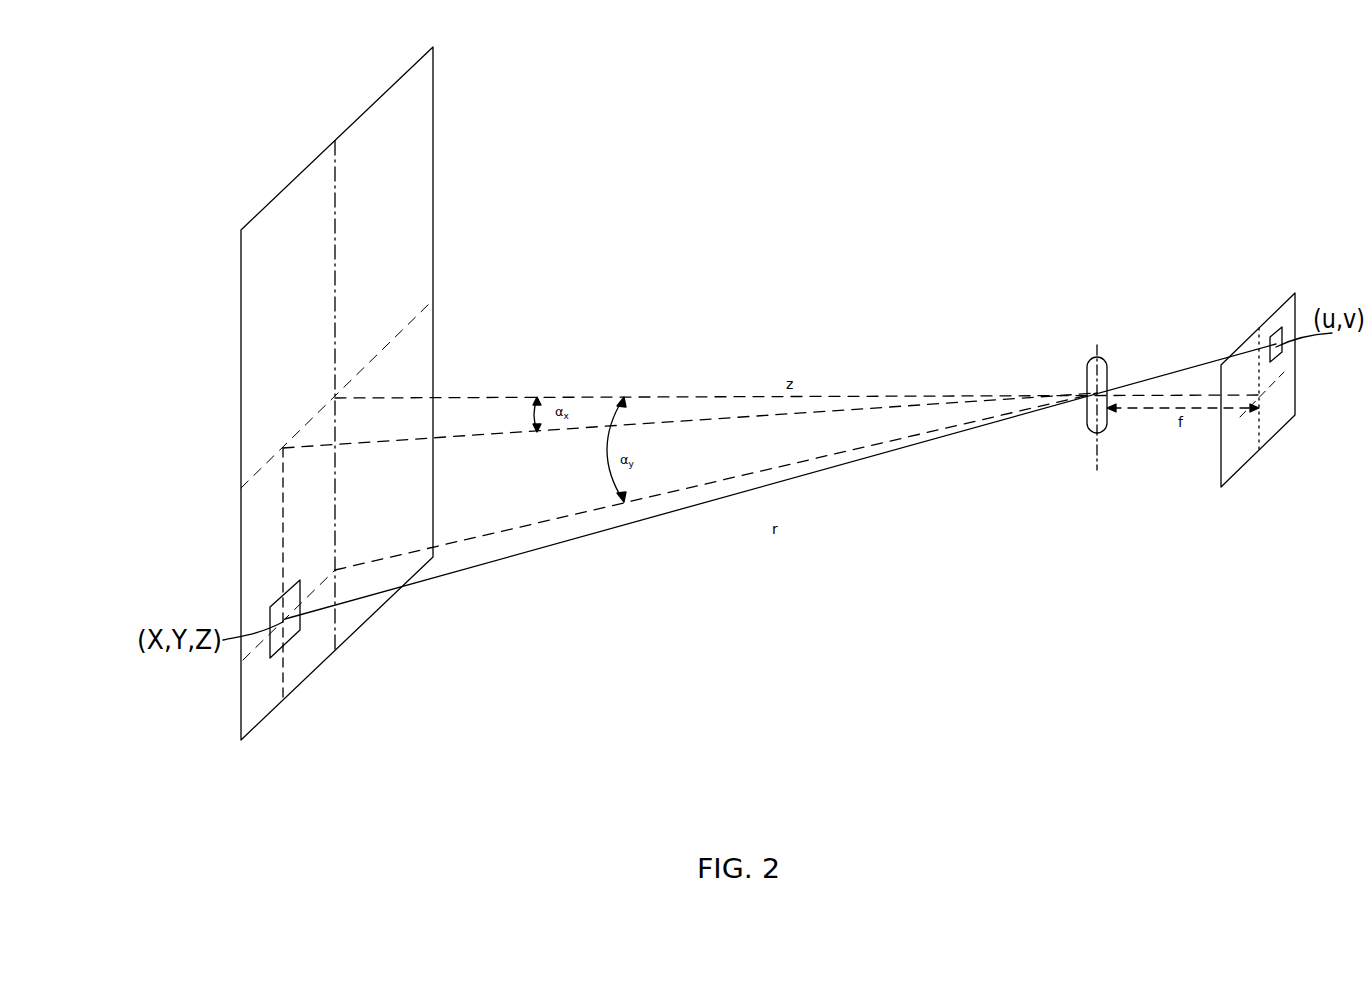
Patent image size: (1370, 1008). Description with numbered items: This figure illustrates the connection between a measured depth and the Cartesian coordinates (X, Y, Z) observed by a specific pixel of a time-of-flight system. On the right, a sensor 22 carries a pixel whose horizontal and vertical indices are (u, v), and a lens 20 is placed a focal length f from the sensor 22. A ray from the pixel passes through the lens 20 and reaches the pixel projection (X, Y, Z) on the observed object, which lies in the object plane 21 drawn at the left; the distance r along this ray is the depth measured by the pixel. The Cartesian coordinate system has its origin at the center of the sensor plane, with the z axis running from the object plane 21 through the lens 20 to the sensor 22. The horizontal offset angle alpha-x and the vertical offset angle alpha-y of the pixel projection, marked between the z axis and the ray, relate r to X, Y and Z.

The lens 20 is at (1080, 370).
The object plane 21 is at (302, 168).
The sensor 22 is at (1297, 292).